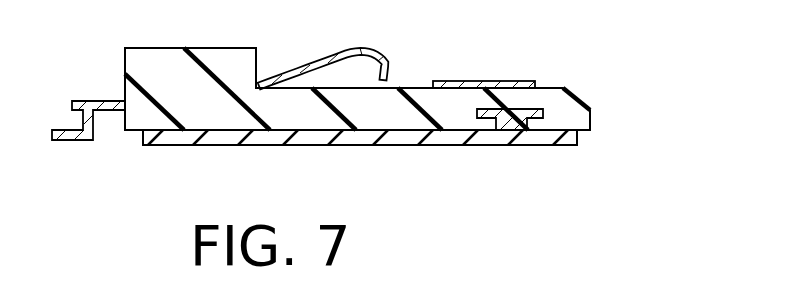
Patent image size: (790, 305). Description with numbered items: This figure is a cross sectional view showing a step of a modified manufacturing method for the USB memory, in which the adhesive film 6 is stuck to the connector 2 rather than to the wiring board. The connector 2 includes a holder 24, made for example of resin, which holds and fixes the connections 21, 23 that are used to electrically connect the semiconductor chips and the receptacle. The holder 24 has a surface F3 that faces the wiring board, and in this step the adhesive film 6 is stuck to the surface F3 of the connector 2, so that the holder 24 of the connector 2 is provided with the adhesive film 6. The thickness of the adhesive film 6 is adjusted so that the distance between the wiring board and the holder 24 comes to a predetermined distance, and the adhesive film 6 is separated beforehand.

The connector 2 is at (518, 75).
The adhesive film 6 is at (452, 134).
The connection 21 is at (92, 102).
The connection 23 is at (487, 110).
The holder 24 is at (580, 100).
The surface F3 is at (596, 131).